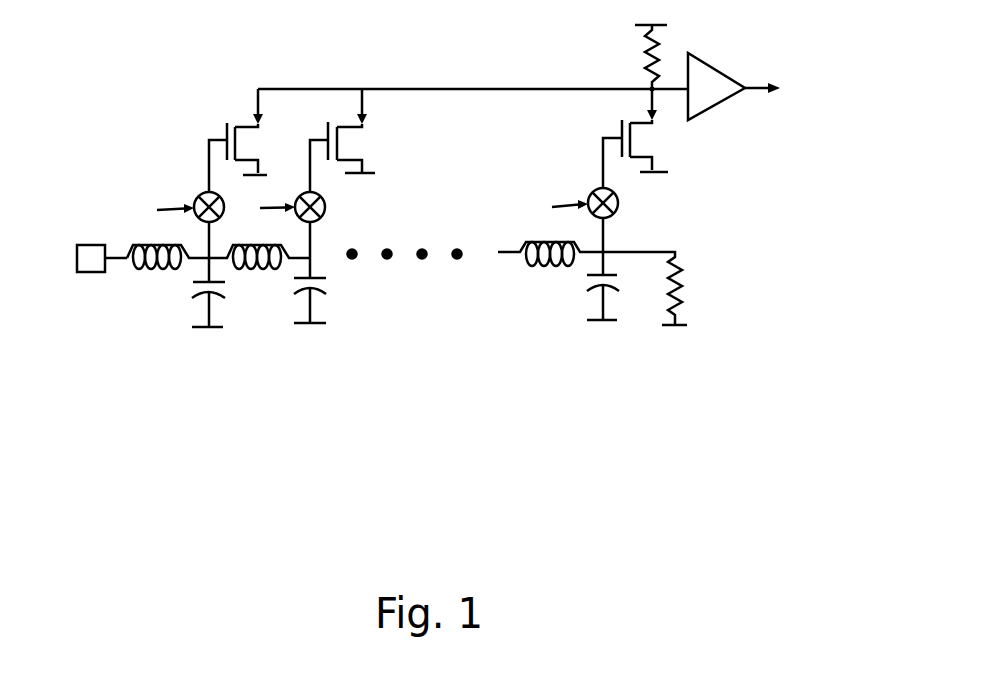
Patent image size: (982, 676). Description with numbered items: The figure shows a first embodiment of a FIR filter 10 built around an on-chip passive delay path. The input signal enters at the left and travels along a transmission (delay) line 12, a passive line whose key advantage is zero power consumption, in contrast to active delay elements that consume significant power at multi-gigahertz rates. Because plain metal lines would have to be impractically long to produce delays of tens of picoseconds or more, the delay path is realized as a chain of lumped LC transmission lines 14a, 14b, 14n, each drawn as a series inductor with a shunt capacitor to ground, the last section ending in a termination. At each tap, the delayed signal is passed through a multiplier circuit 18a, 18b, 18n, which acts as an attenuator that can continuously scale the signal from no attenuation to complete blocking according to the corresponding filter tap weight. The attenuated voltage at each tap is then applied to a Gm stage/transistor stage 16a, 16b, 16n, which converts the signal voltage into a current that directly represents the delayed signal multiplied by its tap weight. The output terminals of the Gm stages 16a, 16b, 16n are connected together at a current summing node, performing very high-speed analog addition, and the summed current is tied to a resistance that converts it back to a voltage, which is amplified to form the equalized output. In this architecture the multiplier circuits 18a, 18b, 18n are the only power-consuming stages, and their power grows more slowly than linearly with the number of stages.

The FIR filter 10 is at (467, 455).
The transmission (delay) line 12 is at (550, 88).
The lumped LC transmission line 14a is at (183, 291).
The lumped LC transmission line 14b is at (337, 289).
The lumped LC transmission line 14n is at (578, 286).
The Gm stage/transistor stage 16a is at (200, 122).
The Gm stage/transistor stage 16b is at (356, 143).
The Gm stage/transistor stage 16n is at (659, 140).
The multiplier circuit 18a is at (198, 196).
The multiplier circuit 18b is at (325, 203).
The multiplier circuit 18n is at (618, 203).